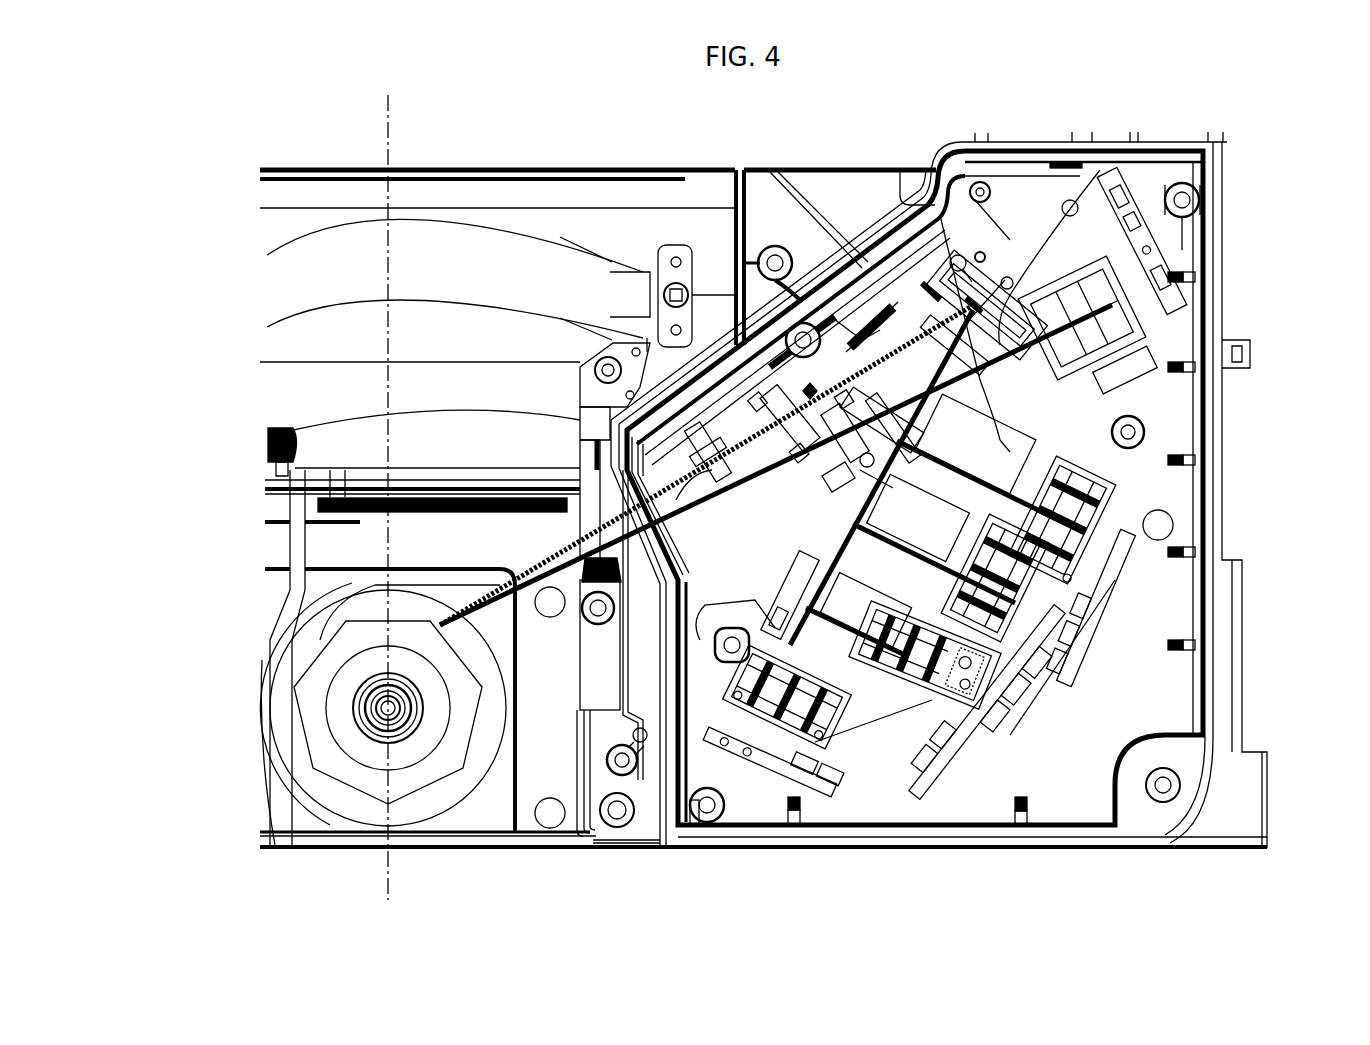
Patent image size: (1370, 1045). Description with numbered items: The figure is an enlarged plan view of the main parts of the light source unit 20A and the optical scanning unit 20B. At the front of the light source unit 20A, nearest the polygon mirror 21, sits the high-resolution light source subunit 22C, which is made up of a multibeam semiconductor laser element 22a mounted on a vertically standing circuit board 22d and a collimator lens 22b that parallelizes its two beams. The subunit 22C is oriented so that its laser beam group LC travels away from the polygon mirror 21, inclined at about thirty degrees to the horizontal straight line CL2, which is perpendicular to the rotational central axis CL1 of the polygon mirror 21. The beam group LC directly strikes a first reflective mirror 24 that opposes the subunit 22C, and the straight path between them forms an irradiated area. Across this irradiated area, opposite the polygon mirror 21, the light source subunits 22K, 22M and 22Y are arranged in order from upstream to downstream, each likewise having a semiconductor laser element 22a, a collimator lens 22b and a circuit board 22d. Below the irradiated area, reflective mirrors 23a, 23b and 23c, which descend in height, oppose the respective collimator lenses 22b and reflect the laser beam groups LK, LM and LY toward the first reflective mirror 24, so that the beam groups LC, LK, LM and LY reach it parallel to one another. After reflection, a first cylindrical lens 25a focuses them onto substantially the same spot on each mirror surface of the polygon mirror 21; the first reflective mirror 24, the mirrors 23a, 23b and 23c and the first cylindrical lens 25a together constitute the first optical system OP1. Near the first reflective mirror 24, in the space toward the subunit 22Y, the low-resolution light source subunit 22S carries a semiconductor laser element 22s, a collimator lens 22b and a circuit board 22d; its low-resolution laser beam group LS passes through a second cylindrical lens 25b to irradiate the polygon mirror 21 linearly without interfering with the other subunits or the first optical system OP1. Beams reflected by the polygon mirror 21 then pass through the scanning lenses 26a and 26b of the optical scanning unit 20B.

The light source unit 20A is at (1170, 686).
The optical scanning unit 20B is at (320, 600).
The polygon mirror 21 is at (302, 718).
The rotational central axis CL1 is at (352, 700).
The horizontal straight line CL2 is at (404, 127).
The collimator lens 22b is at (1065, 305).
The semiconductor laser element 22a is at (1120, 520).
The circuit board 22d is at (1195, 277).
The semiconductor laser element 22s is at (1150, 298).
The low-resolution light source subunit 22S is at (1125, 370).
The light source subunit 22Y is at (1050, 470).
The light source subunit 22M is at (952, 546).
The light source subunit 22C is at (757, 633).
The light source subunit 22K is at (903, 700).
The laser beam group LY is at (968, 480).
The laser beam group LM is at (852, 540).
The laser beam group LC is at (778, 562).
The laser beam group LK is at (880, 700).
The low-resolution laser beam group LS is at (985, 325).
The reflective mirror 23a is at (793, 546).
The reflective mirror 23b is at (843, 480).
The reflective mirror 23c is at (872, 397).
The first reflective mirror 24 is at (950, 350).
The first optical system OP1 is at (915, 380).
The first cylindrical lens 25a is at (762, 397).
The second cylindrical lens 25b is at (845, 395).
The scanning lens 26a is at (325, 437).
The scanning lens 26b is at (292, 282).